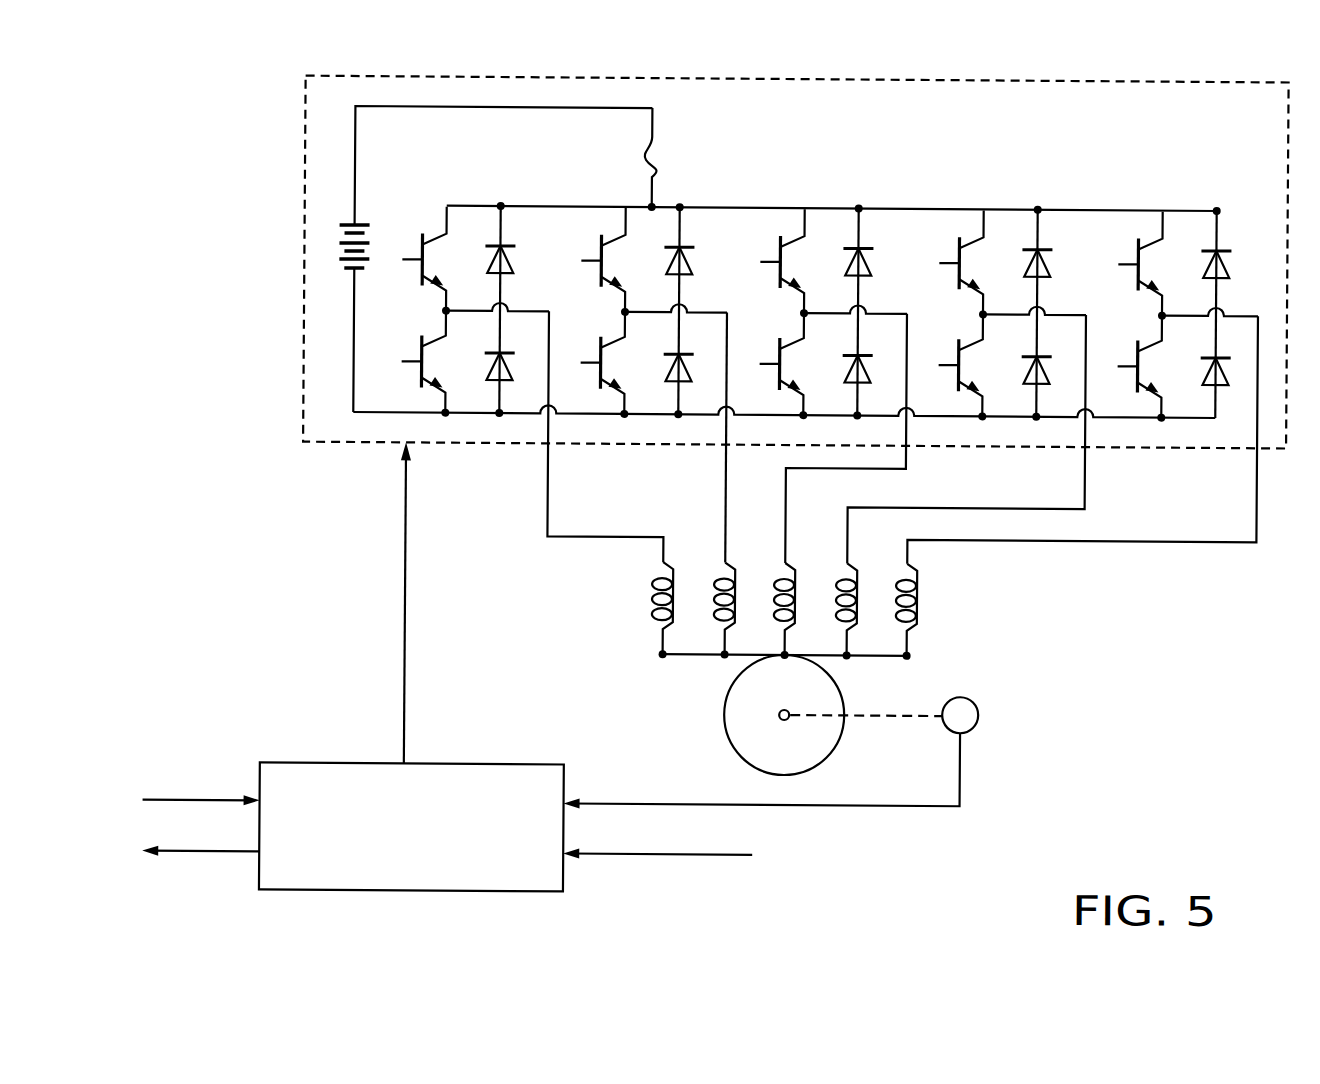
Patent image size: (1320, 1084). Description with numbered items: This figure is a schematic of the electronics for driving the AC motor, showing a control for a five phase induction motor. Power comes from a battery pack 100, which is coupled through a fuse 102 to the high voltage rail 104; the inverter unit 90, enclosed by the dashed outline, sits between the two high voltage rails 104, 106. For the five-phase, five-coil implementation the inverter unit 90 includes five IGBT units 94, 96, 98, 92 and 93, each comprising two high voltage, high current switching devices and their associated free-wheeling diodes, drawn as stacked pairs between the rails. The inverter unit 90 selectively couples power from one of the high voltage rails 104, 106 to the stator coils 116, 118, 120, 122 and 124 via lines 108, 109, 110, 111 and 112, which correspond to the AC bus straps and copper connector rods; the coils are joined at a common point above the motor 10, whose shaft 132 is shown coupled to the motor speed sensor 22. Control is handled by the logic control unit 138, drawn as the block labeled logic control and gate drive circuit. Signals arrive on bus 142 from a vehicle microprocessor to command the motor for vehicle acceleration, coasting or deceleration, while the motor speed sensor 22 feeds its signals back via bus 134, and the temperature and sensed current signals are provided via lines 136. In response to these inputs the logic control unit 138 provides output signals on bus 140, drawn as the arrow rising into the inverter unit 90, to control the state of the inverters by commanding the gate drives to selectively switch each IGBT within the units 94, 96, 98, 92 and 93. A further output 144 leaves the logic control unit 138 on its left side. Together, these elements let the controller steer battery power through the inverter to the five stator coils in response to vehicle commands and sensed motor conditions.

The inverter unit 90 is at (303, 134).
The battery pack 100 is at (367, 237).
The fuse 102 is at (662, 158).
The high voltage rail 104 is at (910, 202).
The high voltage rail 106 is at (1198, 412).
The IGBT unit 94 is at (518, 296).
The IGBT unit 96 is at (598, 310).
The IGBT unit 98 is at (774, 309).
The IGBT unit 92 is at (952, 308).
The IGBT unit 93 is at (1140, 311).
The line 108 is at (548, 502).
The second phase lead 109 is at (727, 488).
The line 110 is at (787, 500).
The fourth phase lead 111 is at (1086, 488).
The line 112 is at (1120, 537).
The stator coil 116 is at (676, 568).
The stator coil 118 is at (739, 578).
The stator coil 120 is at (800, 585).
The stator coil 122 is at (862, 597).
The stator coil 124 is at (920, 600).
The motor 10 is at (700, 732).
The motor speed sensor 22 is at (979, 698).
The rotor shaft 132 is at (790, 720).
The bus 134 is at (826, 804).
The lines 136 is at (683, 853).
The logic control unit 138 is at (320, 770).
The bus 140 is at (353, 603).
The bus 142 is at (200, 797).
The output line 144 is at (206, 852).